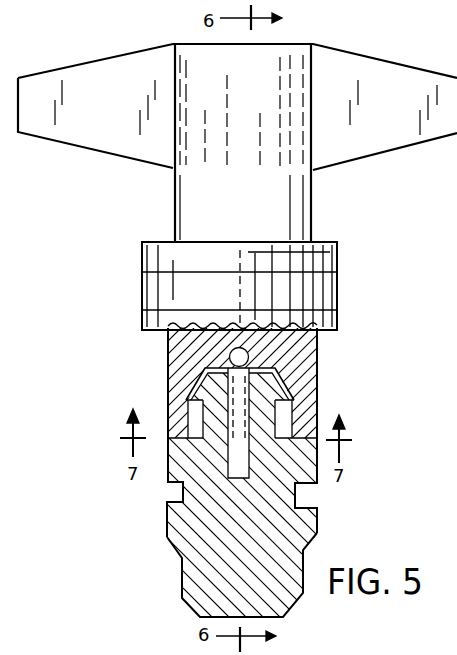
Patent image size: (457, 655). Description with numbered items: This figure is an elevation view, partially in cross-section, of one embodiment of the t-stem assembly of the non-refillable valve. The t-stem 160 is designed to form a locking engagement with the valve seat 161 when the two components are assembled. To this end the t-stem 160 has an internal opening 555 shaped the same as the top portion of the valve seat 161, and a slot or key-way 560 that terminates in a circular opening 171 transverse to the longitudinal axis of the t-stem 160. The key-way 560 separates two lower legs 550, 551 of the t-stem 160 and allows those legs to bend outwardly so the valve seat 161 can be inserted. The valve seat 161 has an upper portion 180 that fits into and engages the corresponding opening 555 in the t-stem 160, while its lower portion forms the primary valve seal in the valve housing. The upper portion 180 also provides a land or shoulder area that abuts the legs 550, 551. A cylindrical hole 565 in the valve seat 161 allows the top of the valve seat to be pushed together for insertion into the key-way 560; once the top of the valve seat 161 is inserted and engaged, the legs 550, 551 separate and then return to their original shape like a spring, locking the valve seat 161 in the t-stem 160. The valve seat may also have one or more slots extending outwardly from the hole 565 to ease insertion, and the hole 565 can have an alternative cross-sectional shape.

The t-stem 160 is at (252, 288).
The circular opening 171 is at (248, 356).
The internal opening 555 is at (289, 382).
The slot or key-way 560 is at (190, 380).
The lower leg 550 is at (176, 418).
The lower leg 551 is at (303, 412).
The upper portion 180 is at (318, 456).
The cylindrical hole 565 is at (232, 463).
The valve seat 161 is at (322, 548).